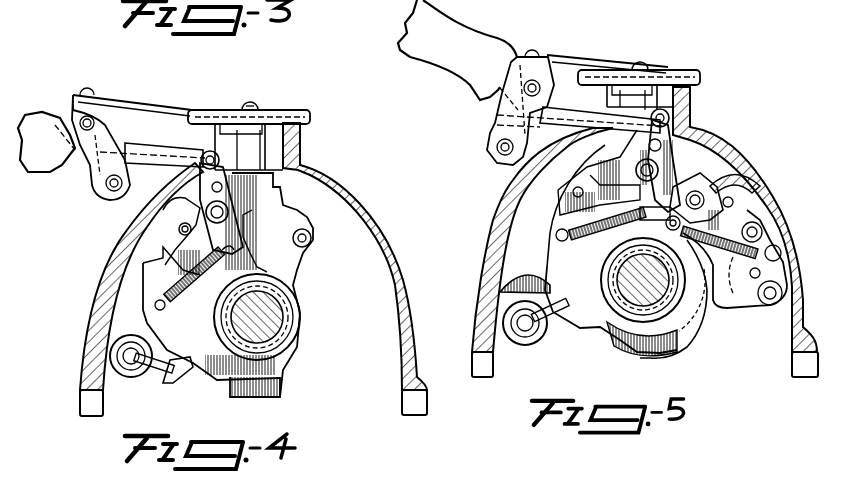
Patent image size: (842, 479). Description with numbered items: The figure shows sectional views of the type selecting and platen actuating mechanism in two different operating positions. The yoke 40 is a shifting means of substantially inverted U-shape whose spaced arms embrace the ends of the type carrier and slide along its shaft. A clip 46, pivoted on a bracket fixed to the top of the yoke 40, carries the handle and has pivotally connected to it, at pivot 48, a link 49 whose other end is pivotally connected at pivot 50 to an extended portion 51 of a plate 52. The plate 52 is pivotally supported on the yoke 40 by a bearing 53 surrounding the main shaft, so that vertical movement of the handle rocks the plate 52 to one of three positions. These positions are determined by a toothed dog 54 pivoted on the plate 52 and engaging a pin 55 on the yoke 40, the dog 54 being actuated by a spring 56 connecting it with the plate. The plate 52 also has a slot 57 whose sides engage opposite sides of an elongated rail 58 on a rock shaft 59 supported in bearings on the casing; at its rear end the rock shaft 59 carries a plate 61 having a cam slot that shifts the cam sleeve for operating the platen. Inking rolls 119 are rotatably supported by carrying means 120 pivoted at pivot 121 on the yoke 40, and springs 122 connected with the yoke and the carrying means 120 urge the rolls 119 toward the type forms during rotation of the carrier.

In FIG. 4, the yoke 40 is at (275, 208).
In FIG. 4, the clip 46 is at (90, 165).
In FIG. 4, the pivot 48 is at (80, 120).
In FIG. 4, the link 49 is at (133, 147).
In FIG. 4, the pivot 50 is at (206, 156).
In FIG. 4, the extended portion 51 is at (203, 190).
In FIG. 4, the plate 52 is at (267, 258).
In FIG. 4, the bearing 53 is at (280, 317).
In FIG. 4, the toothed dog 54 is at (245, 232).
In FIG. 4, the pin 55 is at (178, 226).
In FIG. 4, the spring 56 is at (167, 292).
In FIG. 4, the slot 57 is at (197, 363).
In FIG. 4, the rail 58 is at (158, 380).
In FIG. 4, the rock shaft 59 is at (120, 343).
In FIG. 4, the plate 61 is at (173, 384).
In FIG. 5, the inking rolls 119 is at (720, 207).
In FIG. 5, the carrying means 120 is at (730, 307).
In FIG. 5, the pivot 121 is at (693, 193).
In FIG. 5, the springs 122 is at (760, 182).